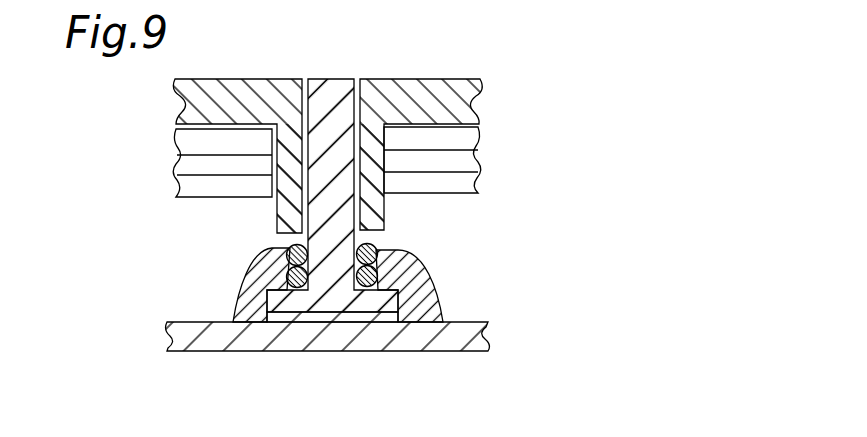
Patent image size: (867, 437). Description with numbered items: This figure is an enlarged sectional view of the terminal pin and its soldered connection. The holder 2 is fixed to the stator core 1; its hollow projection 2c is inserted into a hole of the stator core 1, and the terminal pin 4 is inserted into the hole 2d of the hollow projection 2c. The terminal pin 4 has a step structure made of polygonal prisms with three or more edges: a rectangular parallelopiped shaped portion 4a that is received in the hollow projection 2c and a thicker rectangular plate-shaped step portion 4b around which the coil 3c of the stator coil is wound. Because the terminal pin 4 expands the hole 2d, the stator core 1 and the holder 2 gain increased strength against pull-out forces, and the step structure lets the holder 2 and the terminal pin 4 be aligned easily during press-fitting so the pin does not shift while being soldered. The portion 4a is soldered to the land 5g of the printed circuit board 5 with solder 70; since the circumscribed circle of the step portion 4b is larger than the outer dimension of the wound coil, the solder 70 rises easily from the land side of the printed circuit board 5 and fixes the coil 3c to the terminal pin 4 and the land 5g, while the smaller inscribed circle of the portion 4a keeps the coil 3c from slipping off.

The stator core 1 is at (484, 163).
The holder 2 is at (450, 76).
The hollow projection 2c is at (370, 167).
The hole 2d is at (306, 117).
The coil 3c is at (372, 292).
The terminal pin 4 is at (339, 76).
The rectangular parallelopiped shaped portion 4a is at (330, 205).
The rectangular plate-shaped step portion 4b is at (292, 300).
The printed circuit board 5 is at (193, 347).
The land 5g is at (370, 292).
The solder 70 is at (415, 290).